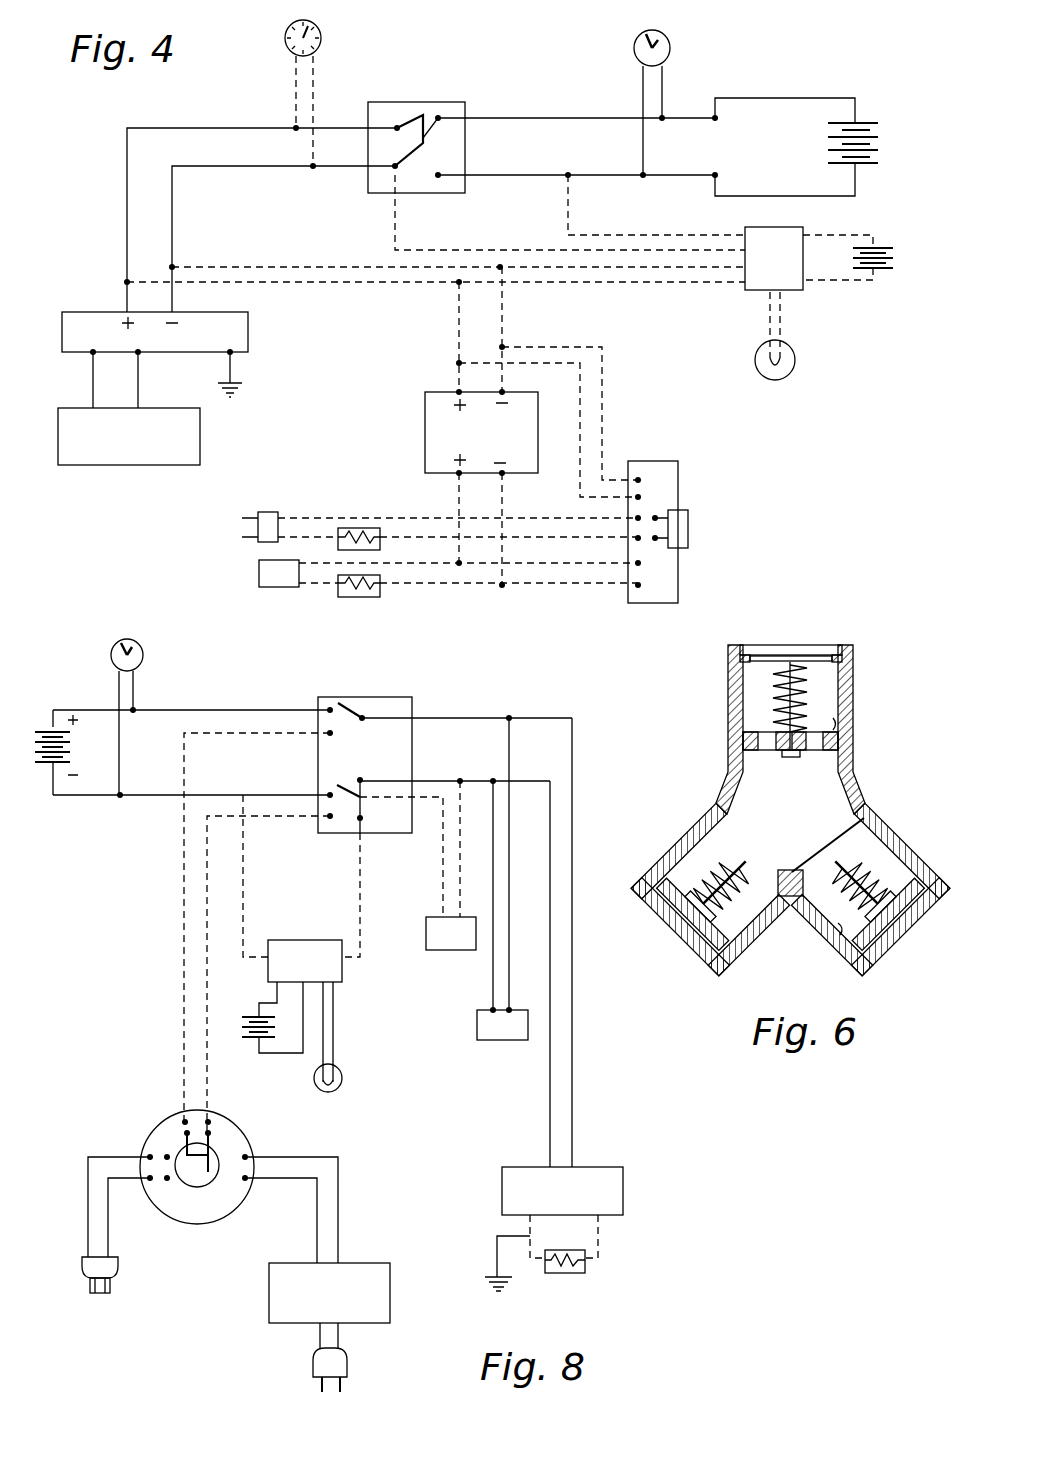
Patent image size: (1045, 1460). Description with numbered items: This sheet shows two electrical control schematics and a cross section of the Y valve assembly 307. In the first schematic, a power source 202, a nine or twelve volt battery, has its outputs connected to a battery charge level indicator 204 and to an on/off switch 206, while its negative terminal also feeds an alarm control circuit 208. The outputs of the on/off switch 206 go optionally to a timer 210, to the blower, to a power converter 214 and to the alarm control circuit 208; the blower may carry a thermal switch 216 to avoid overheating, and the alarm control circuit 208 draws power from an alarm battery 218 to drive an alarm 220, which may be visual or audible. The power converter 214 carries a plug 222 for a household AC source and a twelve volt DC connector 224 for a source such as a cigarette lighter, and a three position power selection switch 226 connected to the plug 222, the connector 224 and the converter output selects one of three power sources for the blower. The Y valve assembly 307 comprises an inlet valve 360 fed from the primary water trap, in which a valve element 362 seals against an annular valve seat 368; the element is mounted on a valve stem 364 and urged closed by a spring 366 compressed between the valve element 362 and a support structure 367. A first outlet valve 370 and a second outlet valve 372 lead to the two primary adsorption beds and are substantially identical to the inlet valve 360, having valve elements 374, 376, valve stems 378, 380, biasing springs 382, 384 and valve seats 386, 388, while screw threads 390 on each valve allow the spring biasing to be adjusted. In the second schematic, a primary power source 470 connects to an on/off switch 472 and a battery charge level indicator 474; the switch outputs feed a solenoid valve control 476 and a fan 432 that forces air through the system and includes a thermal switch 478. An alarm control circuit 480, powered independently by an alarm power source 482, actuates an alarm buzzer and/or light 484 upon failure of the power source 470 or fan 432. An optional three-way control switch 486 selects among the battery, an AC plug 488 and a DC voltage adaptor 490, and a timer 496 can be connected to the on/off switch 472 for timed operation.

In FIG. 4, the power source 202 is at (877, 132).
In FIG. 4, the battery charge level indicator 204 is at (670, 46).
In FIG. 4, the on/off switch 206 is at (465, 103).
In FIG. 4, the alarm control circuit 208 is at (750, 292).
In FIG. 4, the timer 210 is at (321, 38).
In FIG. 4, the power converter 214 is at (425, 432).
In FIG. 4, the thermal switch 216 is at (200, 445).
In FIG. 4, the alarm battery 218 is at (887, 247).
In FIG. 4, the alarm 220 is at (795, 358).
In FIG. 4, the plug 222 is at (275, 513).
In FIG. 4, the 12 volt DC connector 224 is at (278, 587).
In FIG. 4, the three position power selection switch 226 is at (680, 485).
In FIG. 6, the Y valve assembly 307 is at (718, 706).
In FIG. 6, the inlet valve 360 is at (845, 667).
In FIG. 6, the valve element 362 is at (810, 653).
In FIG. 6, the valve stem 364 is at (800, 708).
In FIG. 6, the spring 366 is at (785, 690).
In FIG. 6, the support structure 367 is at (802, 750).
In FIG. 6, the annular valve seat 368 is at (835, 657).
In FIG. 6, the first outlet valve 370 is at (693, 852).
In FIG. 6, the second outlet valve 372 is at (820, 877).
In FIG. 6, the valve element 374 is at (717, 808).
In FIG. 6, the valve element 376 is at (887, 817).
In FIG. 6, the valve stem 378 is at (687, 907).
In FIG. 6, the valve stem 380 is at (880, 940).
In FIG. 6, the biasing spring 382 is at (662, 862).
In FIG. 6, the biasing spring 384 is at (890, 843).
In FIG. 6, the valve seat 386 is at (707, 775).
In FIG. 6, the valve seat 388 is at (867, 815).
In FIG. 6, the screw threads 390 is at (840, 923).
In FIG. 8, the fan 432 is at (625, 1205).
In FIG. 8, the primary power source 470 is at (42, 727).
In FIG. 8, the on/off switch 472 is at (404, 691).
In FIG. 8, the battery charge level indicator 474 is at (145, 653).
In FIG. 8, the solenoid valve control 476 is at (492, 1042).
In FIG. 8, the thermal switch 478 is at (577, 1273).
In FIG. 8, the alarm control circuit 480 is at (305, 938).
In FIG. 8, the alarm power source 482 is at (252, 1042).
In FIG. 8, the alarm buzzer and/or light 484 is at (343, 1087).
In FIG. 8, the three-way control switch 486 is at (182, 1226).
In FIG. 8, the AC plug 488 is at (310, 1355).
In FIG. 8, the DC voltage adaptor 490 is at (116, 1270).
In FIG. 8, the timer 496 is at (438, 950).